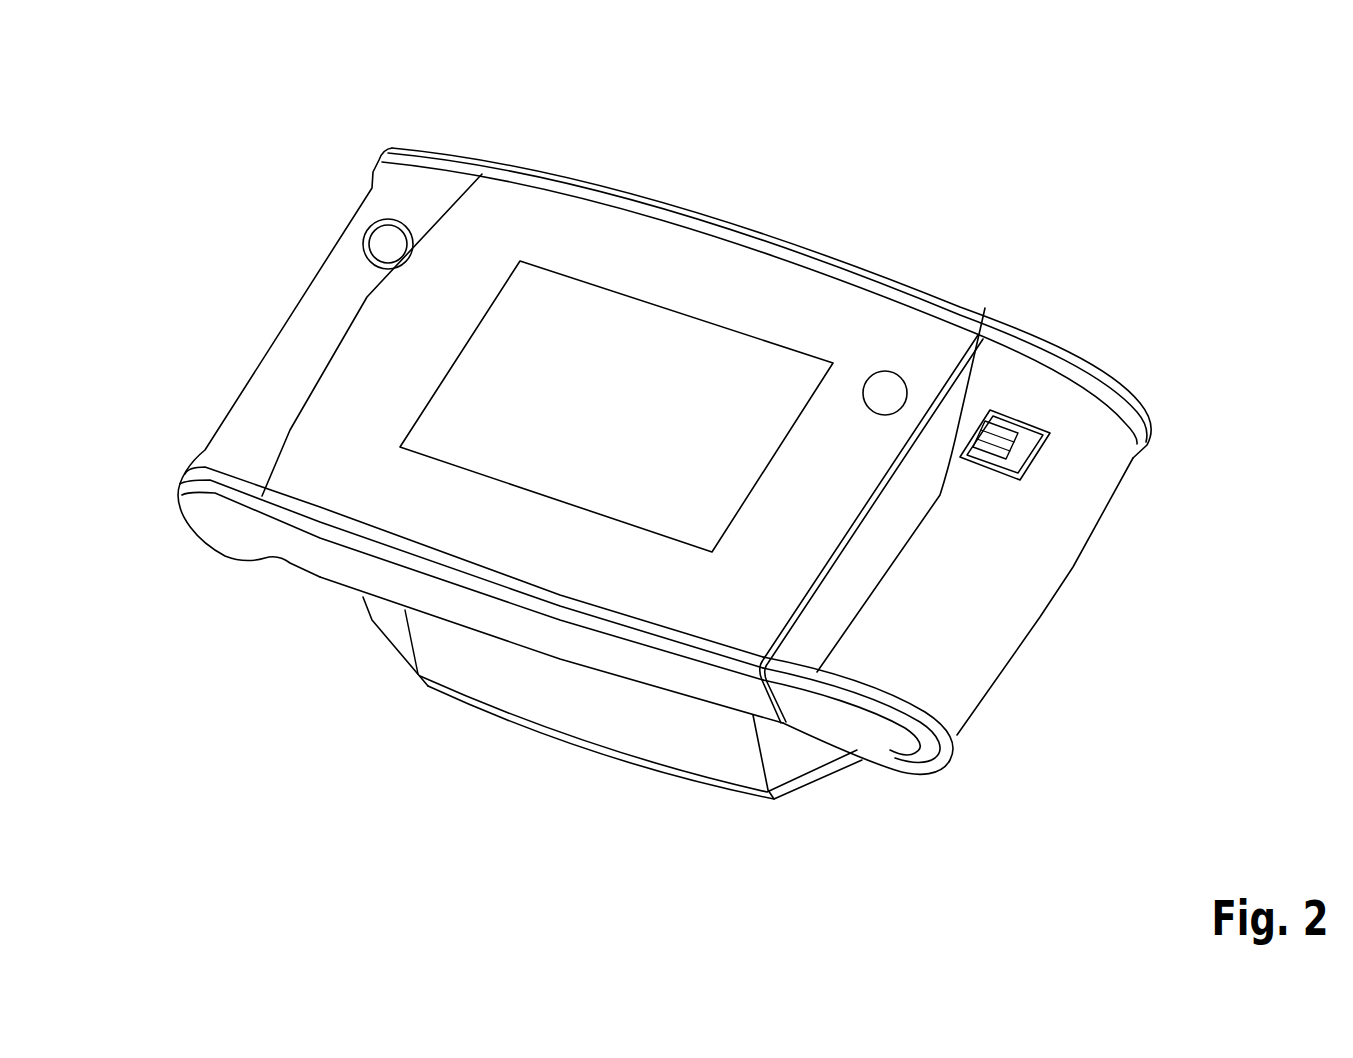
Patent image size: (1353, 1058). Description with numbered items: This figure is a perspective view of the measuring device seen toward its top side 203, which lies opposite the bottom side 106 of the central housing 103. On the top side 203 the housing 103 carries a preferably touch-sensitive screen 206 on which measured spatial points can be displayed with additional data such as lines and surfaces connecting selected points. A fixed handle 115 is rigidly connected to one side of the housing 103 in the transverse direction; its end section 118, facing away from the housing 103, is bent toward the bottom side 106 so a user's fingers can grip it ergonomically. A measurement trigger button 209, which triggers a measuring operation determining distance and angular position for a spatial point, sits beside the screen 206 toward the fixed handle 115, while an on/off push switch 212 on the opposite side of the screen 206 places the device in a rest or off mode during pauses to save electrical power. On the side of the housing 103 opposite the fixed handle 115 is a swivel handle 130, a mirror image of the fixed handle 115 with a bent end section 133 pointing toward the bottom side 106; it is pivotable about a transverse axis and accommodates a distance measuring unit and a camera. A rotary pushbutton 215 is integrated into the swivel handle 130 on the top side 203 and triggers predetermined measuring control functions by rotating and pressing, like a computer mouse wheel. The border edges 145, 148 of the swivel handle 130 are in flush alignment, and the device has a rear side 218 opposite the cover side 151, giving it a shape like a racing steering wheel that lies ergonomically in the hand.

The fixed handle 115 is at (250, 337).
The end section 118 is at (317, 310).
The measurement trigger button 209 is at (385, 247).
The screen 206 is at (543, 365).
The border edge 145 is at (631, 200).
The cover side 151 is at (743, 228).
The top side 203 is at (805, 328).
The on/off push switch 212 is at (885, 393).
The rotary pushbutton 215 is at (1000, 437).
The bent end section 133 is at (992, 610).
The swivel handle 130 is at (1073, 570).
The rear side 218 is at (318, 558).
The border edge 148 is at (470, 632).
The housing 103 is at (592, 713).
The bottom side 106 is at (677, 787).